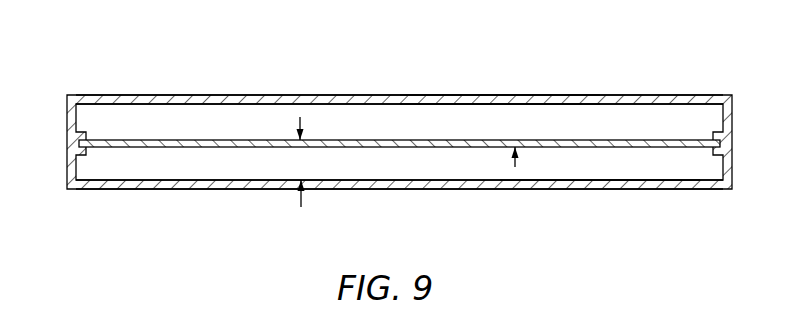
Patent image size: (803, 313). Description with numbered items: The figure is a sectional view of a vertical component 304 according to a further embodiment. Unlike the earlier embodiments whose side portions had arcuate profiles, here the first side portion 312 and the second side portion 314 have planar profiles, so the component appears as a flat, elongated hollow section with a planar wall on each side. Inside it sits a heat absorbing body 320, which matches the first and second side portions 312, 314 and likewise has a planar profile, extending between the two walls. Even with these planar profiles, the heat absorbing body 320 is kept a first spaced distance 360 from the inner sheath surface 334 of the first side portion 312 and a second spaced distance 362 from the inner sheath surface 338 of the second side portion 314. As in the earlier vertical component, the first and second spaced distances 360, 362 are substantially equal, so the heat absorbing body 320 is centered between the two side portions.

The vertical component 304 is at (128, 80).
The first side portion 312 is at (572, 189).
The second side portion 314 is at (273, 96).
The heat absorbing body 320 is at (258, 147).
The inner sheath surface 334 is at (611, 179).
The inner sheath surface 338 is at (483, 104).
The first spaced distance 360 is at (301, 205).
The second spaced distance 362 is at (515, 96).